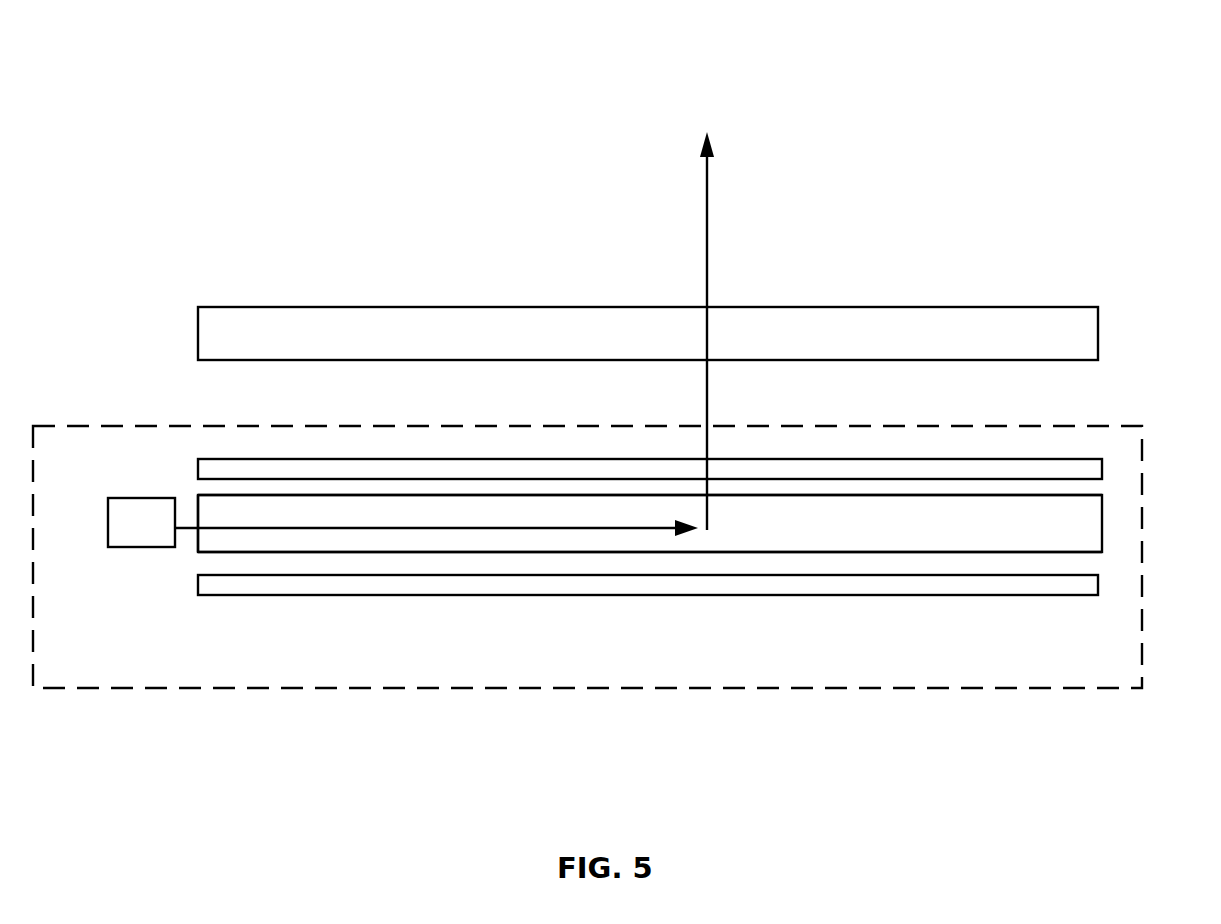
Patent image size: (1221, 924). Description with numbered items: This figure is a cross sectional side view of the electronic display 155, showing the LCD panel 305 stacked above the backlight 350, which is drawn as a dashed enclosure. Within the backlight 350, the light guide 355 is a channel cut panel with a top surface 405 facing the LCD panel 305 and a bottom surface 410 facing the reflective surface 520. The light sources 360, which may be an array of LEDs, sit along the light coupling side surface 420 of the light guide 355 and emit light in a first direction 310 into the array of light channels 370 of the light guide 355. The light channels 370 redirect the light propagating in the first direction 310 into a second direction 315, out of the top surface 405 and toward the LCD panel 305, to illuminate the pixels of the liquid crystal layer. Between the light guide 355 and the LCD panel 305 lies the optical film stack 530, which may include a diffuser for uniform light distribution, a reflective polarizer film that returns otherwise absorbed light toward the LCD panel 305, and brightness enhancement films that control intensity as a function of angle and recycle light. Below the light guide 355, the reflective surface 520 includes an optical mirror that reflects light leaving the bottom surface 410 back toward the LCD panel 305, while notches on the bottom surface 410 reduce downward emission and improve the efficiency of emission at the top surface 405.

The electronic display 155 is at (572, 107).
The LCD panel 305 is at (262, 327).
The backlight 350 is at (480, 425).
The second direction 315 is at (710, 250).
The optical film stack 530 is at (222, 462).
The light guide 355 is at (1037, 495).
The top surface 405 is at (888, 495).
The bottom surface 410 is at (1022, 557).
The light coupling side surface 420 is at (197, 543).
The light channels 370 is at (760, 528).
The light sources 360 is at (127, 545).
The first direction 310 is at (517, 528).
The reflective surface 520 is at (350, 583).